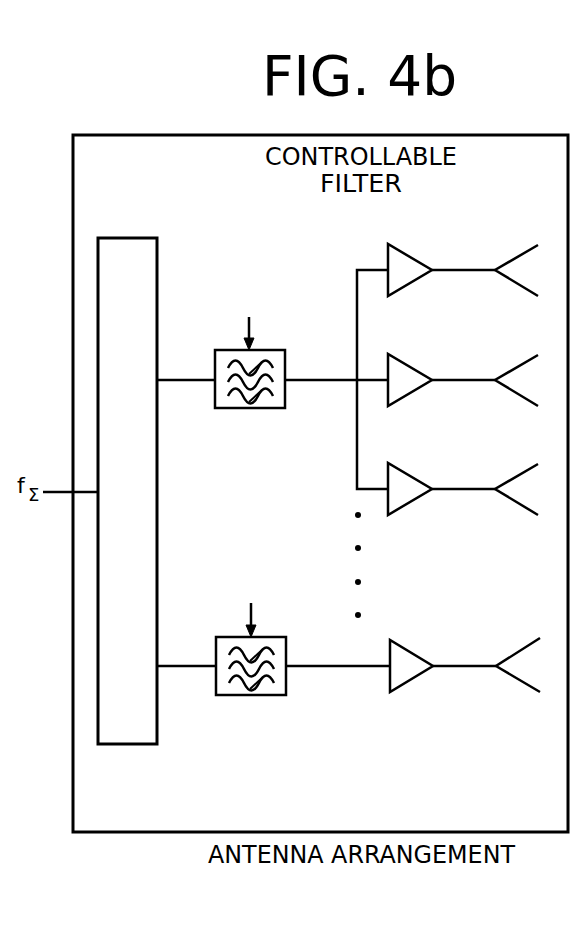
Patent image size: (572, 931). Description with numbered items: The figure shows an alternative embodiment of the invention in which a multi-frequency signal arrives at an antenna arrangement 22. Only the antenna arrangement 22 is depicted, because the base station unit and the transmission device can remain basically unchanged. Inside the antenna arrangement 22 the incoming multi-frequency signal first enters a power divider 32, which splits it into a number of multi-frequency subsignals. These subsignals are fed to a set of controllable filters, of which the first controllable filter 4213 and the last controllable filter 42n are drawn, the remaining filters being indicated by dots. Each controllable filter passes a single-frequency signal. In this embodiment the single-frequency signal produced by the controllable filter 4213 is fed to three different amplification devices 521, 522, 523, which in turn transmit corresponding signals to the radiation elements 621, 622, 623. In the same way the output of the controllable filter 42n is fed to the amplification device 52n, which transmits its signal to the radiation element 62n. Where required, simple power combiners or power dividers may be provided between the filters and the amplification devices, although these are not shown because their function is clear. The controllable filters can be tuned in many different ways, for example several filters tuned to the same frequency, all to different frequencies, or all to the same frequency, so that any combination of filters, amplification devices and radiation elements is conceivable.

The antenna arrangement 22 is at (70, 784).
The power divider 32 is at (113, 237).
The controllable filter 4213 is at (215, 363).
The controllable filter 42n is at (217, 652).
The amplification device 521 is at (415, 257).
The amplification device 522 is at (415, 367).
The amplification device 523 is at (416, 476).
The amplification device 52n is at (417, 652).
The radiation element 621 is at (523, 250).
The radiation element 622 is at (522, 360).
The radiation element 623 is at (522, 467).
The radiation element 62n is at (515, 687).